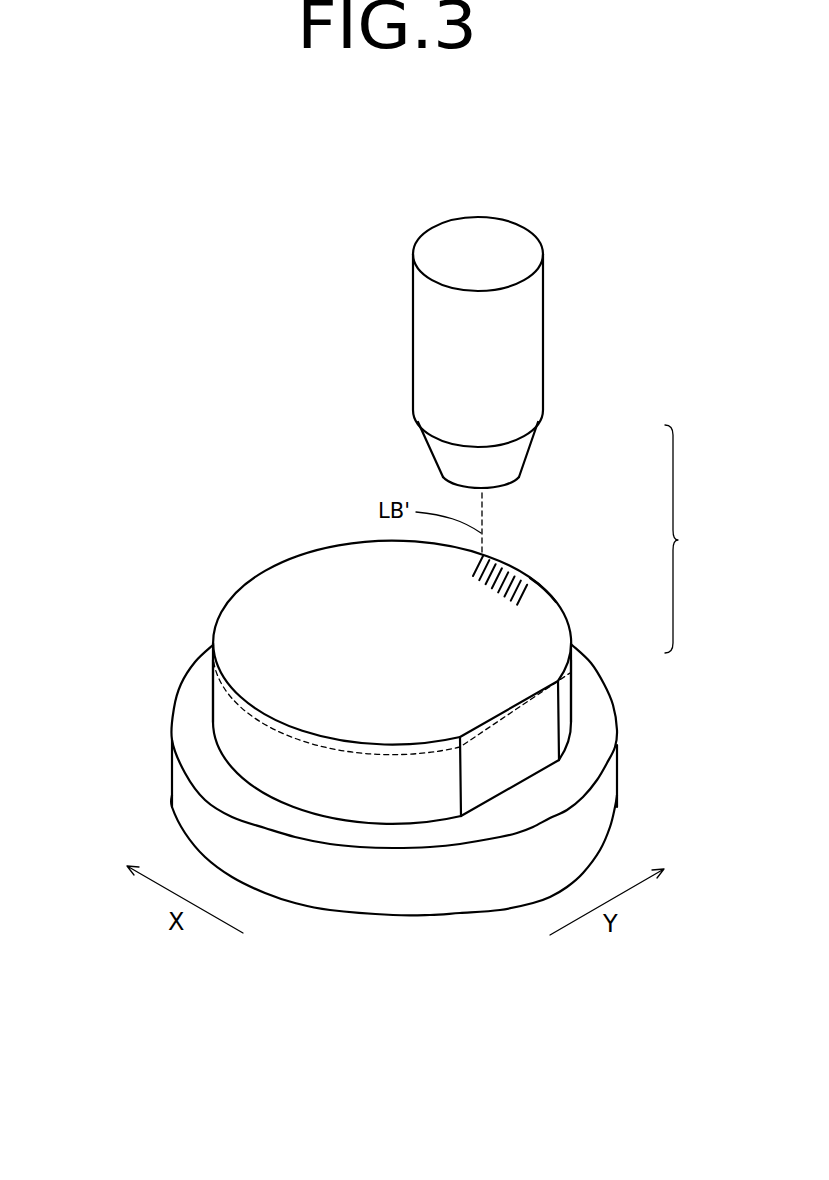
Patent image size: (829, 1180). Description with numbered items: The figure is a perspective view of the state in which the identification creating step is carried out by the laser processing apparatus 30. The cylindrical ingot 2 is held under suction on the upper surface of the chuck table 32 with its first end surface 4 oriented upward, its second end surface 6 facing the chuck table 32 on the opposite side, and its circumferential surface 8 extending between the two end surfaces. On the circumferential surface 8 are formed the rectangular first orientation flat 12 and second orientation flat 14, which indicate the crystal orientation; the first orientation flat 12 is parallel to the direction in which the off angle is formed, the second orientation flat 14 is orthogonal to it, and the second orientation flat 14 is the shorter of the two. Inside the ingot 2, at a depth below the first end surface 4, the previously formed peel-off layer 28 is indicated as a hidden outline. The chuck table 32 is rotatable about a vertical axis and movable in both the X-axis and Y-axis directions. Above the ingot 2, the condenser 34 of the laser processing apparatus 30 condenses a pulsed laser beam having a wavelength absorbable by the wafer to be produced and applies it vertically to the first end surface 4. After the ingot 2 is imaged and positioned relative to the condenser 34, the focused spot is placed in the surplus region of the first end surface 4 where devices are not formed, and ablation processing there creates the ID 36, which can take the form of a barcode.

The ingot 2 is at (247, 582).
The first end surface 4 is at (243, 622).
The second end surface 6 is at (222, 752).
The circumferential surface 8 is at (368, 795).
The first orientation flat 12 is at (508, 758).
The second orientation flat 14 is at (542, 590).
The peel-off layer 28 is at (214, 712).
The laser processing apparatus 30 is at (687, 539).
The chuck table 32 is at (593, 695).
The condenser 34 is at (512, 393).
The ID 36 is at (507, 597).